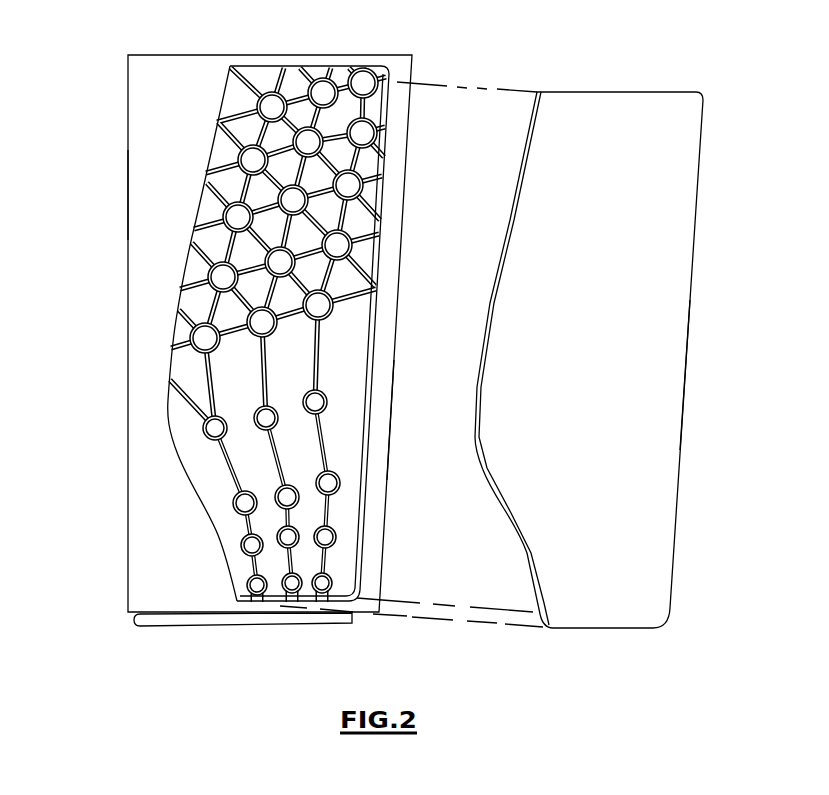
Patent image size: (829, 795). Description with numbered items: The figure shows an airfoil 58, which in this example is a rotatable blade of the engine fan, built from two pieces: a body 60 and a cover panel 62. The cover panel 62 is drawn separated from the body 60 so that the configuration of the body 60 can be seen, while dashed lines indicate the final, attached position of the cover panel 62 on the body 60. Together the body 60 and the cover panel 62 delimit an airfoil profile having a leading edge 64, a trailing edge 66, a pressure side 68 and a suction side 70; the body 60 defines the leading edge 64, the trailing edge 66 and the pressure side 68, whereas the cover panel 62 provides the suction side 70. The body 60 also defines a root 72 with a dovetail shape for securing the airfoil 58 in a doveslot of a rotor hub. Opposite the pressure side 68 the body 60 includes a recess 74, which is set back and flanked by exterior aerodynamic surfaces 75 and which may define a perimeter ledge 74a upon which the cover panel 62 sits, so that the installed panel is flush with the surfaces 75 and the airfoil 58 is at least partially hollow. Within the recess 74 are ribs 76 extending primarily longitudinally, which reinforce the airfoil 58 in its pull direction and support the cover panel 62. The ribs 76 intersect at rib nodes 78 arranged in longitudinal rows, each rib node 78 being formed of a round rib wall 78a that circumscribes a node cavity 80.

The airfoil 58 is at (253, 342).
The body 60 is at (261, 307).
The cover panel 62 is at (603, 333).
The leading edge 64 is at (271, 334).
The trailing edge 66 is at (390, 457).
The pressure side 68 is at (127, 188).
The suction side 70 is at (647, 362).
The root 72 is at (342, 625).
The recess 74 is at (340, 368).
The perimeter ledge 74a is at (357, 566).
The exterior aerodynamic surfaces 75 is at (147, 393).
The ribs 76 is at (320, 340).
The rib nodes 78 is at (326, 241).
The rib wall 78a is at (345, 165).
The node cavity 80 is at (356, 145).